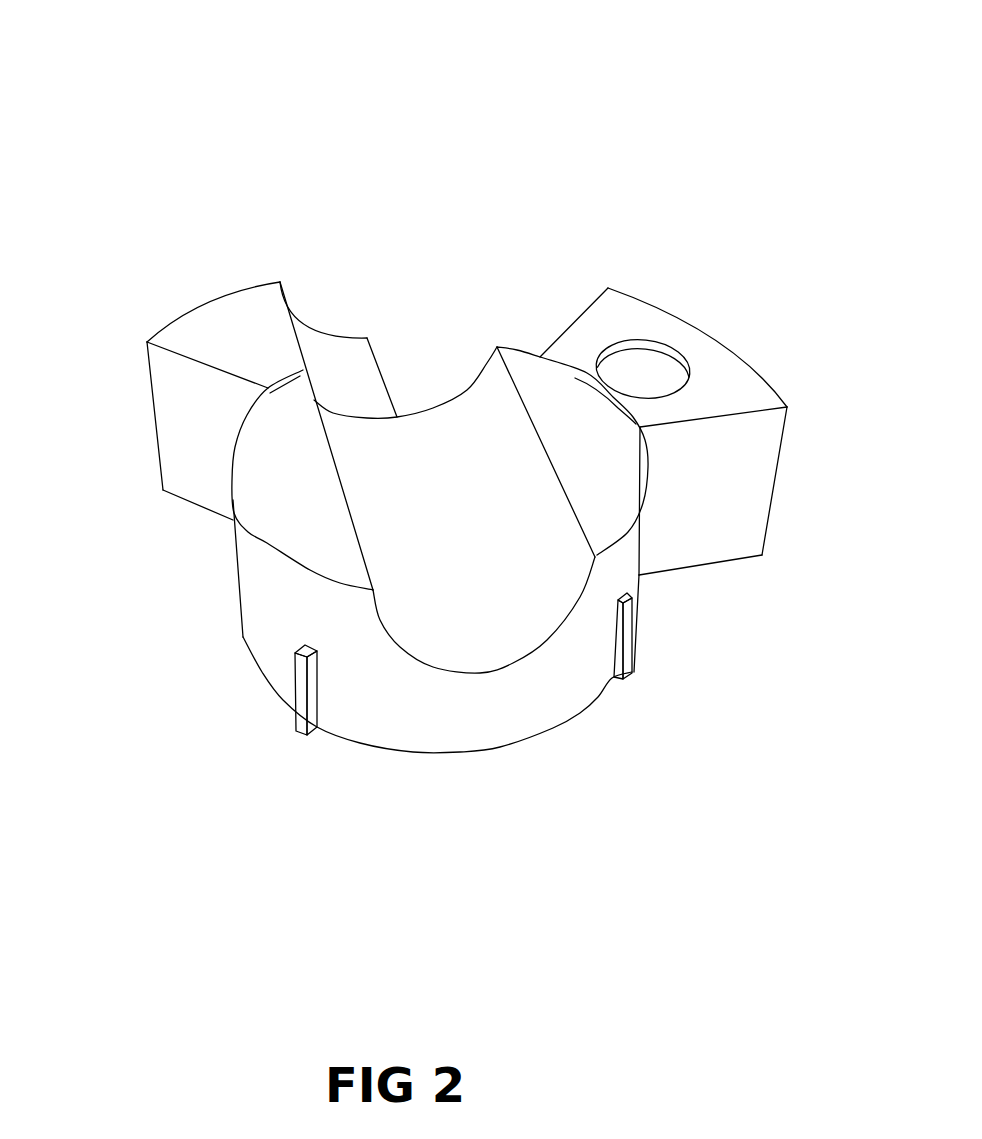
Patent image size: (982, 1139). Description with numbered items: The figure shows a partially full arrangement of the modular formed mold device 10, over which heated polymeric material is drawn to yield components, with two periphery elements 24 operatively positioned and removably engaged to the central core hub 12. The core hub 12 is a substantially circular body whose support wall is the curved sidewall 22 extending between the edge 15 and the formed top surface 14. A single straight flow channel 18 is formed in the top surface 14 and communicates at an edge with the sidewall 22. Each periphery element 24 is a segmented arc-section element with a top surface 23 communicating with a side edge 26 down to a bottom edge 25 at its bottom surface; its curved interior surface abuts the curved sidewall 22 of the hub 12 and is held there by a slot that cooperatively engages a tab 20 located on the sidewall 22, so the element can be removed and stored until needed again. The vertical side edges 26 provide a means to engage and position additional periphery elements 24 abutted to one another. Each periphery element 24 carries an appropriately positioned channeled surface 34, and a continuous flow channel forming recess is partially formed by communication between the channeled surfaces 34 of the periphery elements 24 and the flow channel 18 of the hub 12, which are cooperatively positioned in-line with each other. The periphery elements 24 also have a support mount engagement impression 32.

The modular formed mold device 10 is at (419, 125).
The center core hub 12 is at (582, 713).
The top surface 14 is at (553, 392).
The edge 15 is at (498, 747).
The flow channel 18 is at (413, 664).
The tab 20 is at (627, 638).
The curved sidewall 22 is at (277, 612).
The top surface of periphery element 23 is at (213, 310).
The periphery core element 24 is at (148, 362).
The bottom edge 25 is at (217, 510).
The side edge 26 is at (183, 468).
The support mount engagement impression 32 is at (646, 353).
The channeled surface 34 is at (325, 352).